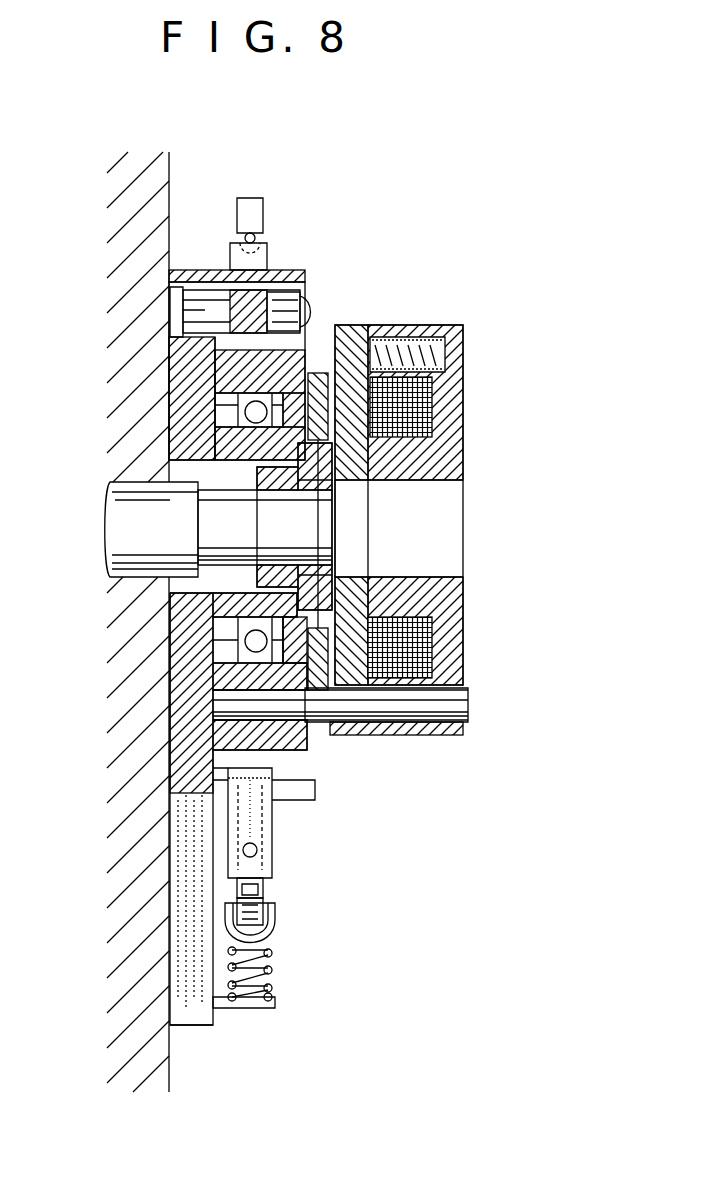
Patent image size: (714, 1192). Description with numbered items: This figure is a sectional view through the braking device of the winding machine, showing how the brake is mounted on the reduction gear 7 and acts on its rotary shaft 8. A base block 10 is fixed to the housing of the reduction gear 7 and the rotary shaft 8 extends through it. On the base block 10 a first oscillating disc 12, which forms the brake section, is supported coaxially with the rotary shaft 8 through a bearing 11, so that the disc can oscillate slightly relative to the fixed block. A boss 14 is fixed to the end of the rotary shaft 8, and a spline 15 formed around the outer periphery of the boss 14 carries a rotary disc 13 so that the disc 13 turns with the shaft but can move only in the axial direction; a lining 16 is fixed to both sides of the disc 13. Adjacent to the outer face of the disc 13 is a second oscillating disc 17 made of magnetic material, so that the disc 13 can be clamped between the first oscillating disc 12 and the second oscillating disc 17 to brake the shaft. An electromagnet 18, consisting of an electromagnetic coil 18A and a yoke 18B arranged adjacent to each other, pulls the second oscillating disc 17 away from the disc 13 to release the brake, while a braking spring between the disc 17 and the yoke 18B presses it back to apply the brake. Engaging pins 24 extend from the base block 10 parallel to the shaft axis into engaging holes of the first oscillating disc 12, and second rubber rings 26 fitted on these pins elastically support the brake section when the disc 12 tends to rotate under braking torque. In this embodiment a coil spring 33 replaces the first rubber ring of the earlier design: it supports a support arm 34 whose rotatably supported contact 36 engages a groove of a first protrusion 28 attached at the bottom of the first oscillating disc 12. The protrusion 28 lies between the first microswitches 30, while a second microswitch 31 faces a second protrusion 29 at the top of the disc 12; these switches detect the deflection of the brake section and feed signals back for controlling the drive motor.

The reduction gear 7 is at (170, 167).
The rotary shaft 8 is at (105, 492).
The base block 10 is at (170, 660).
The bearing 11 is at (246, 465).
The first oscillating disc 12 is at (305, 276).
The rotary disc 13 is at (316, 700).
The boss 14 is at (332, 573).
The spline 15 is at (336, 485).
The lining 16 is at (318, 373).
The second oscillating disc 17 is at (360, 325).
The electromagnet 18 is at (494, 517).
The electromagnetic coil 18A is at (432, 645).
The yoke 18B is at (463, 662).
The engaging pin 24 is at (170, 316).
The second rubber ring 26 is at (215, 372).
The first protrusion 28 is at (315, 790).
The second protrusion 29 is at (268, 252).
The first microswitches 30 is at (272, 846).
The second microswitch 31 is at (250, 198).
The coil spring 33 is at (272, 985).
The support arm 34 is at (275, 930).
The contact 36 is at (275, 917).